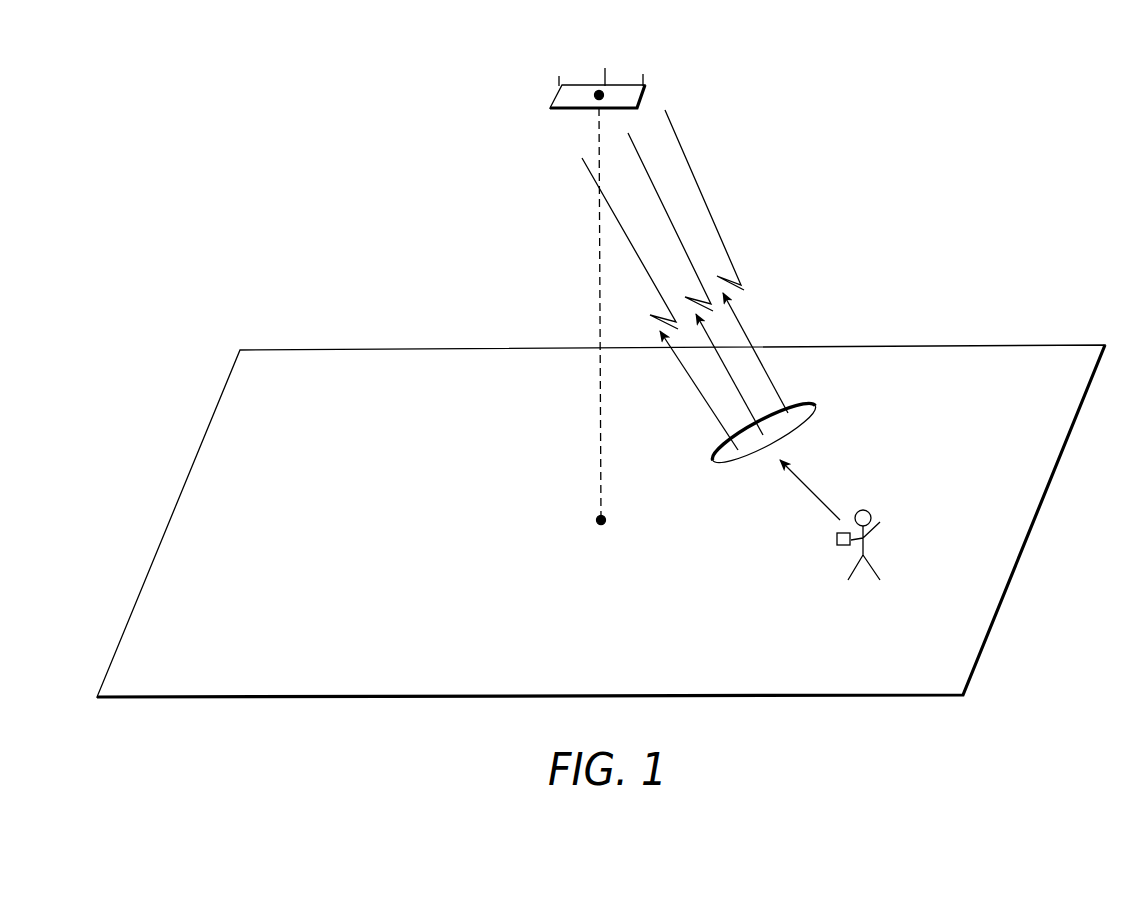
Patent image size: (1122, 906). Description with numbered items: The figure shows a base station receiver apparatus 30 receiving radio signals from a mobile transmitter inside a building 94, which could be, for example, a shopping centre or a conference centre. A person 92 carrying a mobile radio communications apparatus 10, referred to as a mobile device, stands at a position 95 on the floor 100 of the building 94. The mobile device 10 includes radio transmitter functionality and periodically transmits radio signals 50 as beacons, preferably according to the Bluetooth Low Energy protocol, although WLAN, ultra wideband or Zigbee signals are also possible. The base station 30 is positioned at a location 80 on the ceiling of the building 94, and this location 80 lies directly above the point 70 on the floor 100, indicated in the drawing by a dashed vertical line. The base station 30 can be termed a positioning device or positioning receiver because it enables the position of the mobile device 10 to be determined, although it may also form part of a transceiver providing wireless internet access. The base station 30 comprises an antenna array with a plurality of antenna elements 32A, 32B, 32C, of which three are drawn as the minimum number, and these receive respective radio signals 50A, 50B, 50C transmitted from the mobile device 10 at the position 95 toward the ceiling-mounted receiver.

The mobile radio communications apparatus 10 is at (837, 539).
The base station receiver apparatus 30 is at (558, 115).
The antenna element 32A is at (559, 78).
The antenna element 32B is at (605, 70).
The antenna element 32C is at (643, 77).
The radio signals 50 is at (815, 410).
The radio signal 50A is at (590, 177).
The radio signal 50B is at (730, 385).
The radio signal 50C is at (703, 197).
The point on the floor 70 is at (597, 520).
The location 80 is at (601, 93).
The person 92 is at (918, 490).
The building 94 is at (1053, 250).
The position 95 is at (875, 530).
The floor 100 is at (428, 697).